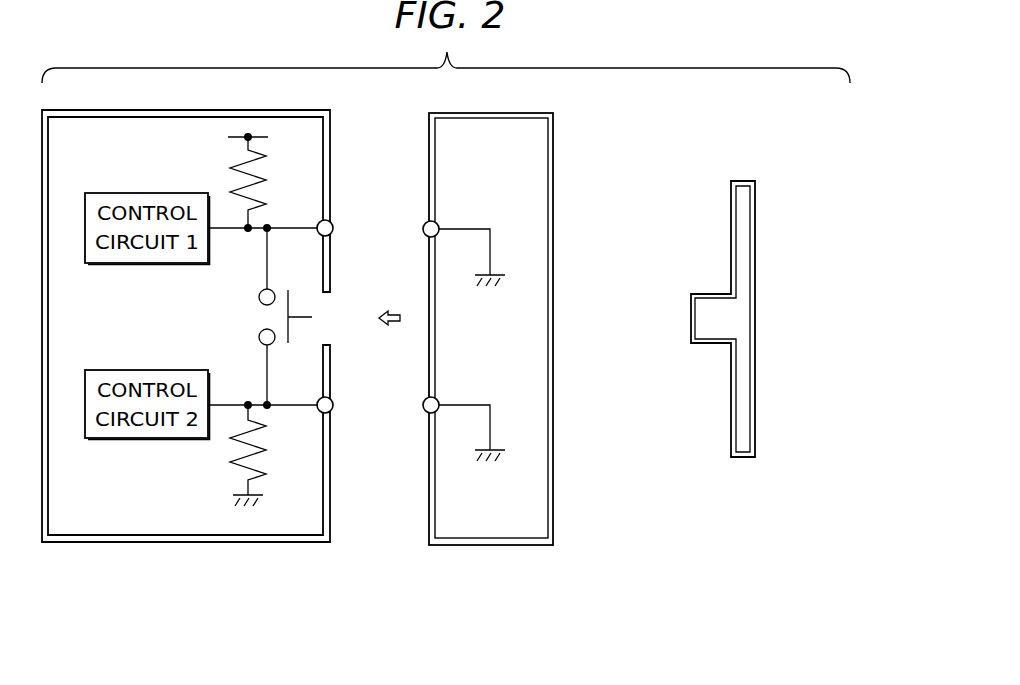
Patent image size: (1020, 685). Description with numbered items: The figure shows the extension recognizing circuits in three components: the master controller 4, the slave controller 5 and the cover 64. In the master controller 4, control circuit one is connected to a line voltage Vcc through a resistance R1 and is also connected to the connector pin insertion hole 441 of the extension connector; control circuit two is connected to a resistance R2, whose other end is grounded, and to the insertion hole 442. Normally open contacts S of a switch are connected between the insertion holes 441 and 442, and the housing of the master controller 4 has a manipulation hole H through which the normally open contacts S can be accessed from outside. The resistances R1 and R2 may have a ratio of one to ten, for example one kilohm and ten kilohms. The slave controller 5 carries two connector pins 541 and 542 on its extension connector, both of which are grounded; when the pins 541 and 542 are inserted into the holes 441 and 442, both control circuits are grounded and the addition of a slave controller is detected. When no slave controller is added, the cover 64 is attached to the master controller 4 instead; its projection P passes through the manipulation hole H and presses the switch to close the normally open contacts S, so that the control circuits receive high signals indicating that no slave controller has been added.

The master controller 4 is at (184, 542).
The slave controller 5 is at (490, 545).
The cover 64 is at (745, 457).
The connector pin insertion hole 441 is at (333, 223).
The connector pin insertion hole 442 is at (333, 399).
The connector pin 541 is at (438, 222).
The connector pin 542 is at (438, 398).
The resistance R1 is at (264, 182).
The resistance R2 is at (264, 455).
The normally open contacts S is at (292, 290).
The manipulation hole H is at (332, 316).
The projection P is at (710, 308).
The line voltage Vcc is at (227, 138).